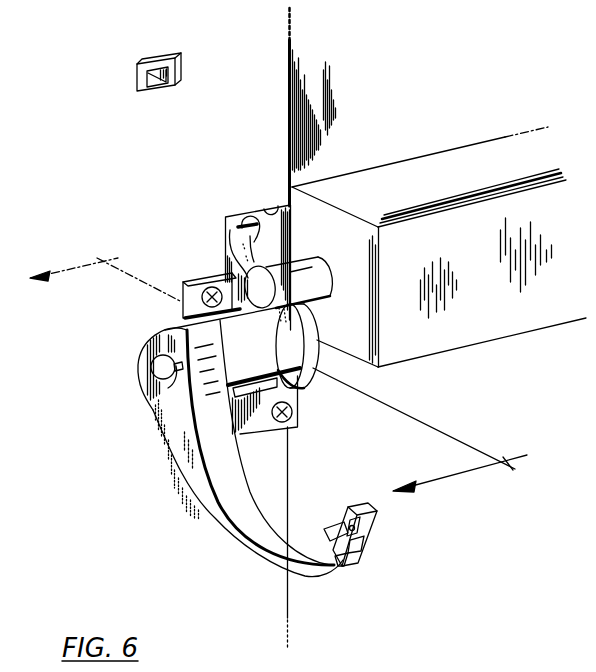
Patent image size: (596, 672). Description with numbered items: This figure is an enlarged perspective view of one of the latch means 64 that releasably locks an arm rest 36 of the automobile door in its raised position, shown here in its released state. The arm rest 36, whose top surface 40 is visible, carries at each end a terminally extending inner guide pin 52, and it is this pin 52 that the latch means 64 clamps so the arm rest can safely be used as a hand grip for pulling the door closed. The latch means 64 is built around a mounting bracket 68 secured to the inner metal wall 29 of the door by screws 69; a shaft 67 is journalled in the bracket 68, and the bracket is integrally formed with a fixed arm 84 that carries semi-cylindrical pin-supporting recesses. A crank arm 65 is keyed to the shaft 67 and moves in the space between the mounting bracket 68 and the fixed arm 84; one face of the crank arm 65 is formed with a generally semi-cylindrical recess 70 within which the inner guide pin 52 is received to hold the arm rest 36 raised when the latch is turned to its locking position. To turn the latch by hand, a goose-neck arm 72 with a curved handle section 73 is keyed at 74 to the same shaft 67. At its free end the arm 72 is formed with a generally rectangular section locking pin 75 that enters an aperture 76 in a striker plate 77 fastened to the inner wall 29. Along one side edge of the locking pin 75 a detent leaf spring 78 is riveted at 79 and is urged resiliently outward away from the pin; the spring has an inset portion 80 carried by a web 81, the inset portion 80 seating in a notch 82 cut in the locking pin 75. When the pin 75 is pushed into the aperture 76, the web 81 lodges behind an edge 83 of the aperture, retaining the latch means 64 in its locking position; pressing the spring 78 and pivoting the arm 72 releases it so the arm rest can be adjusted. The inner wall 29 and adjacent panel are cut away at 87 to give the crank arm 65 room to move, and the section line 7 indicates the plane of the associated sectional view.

The section line 7- 7 is at (278, 388).
The inner metal wall 29 is at (268, 581).
The arm rest 36 is at (441, 186).
The top surface 40 is at (425, 203).
The inner guide pin 52 is at (311, 272).
The latch means 64 is at (150, 470).
The crank arm 65 is at (232, 256).
The shaft 67 is at (160, 358).
The mounting bracket 68 is at (247, 357).
The screws 69 is at (208, 289).
The semi-cylindrical recess 70 is at (260, 230).
The goose-neck arm 72 is at (246, 537).
The curved handle section 73 is at (218, 510).
The key 74 is at (167, 388).
The locking pin 75 is at (361, 507).
The aperture 76 is at (166, 86).
The striker plate 77 is at (164, 63).
The detent leaf spring 78 is at (344, 524).
The rivet 79 is at (351, 514).
The inset portion 80 is at (345, 564).
The web 81 is at (332, 530).
The notch 82 is at (364, 542).
The edge 83 is at (142, 82).
The fixed arm 84 is at (306, 335).
The cut-away 87 is at (283, 207).